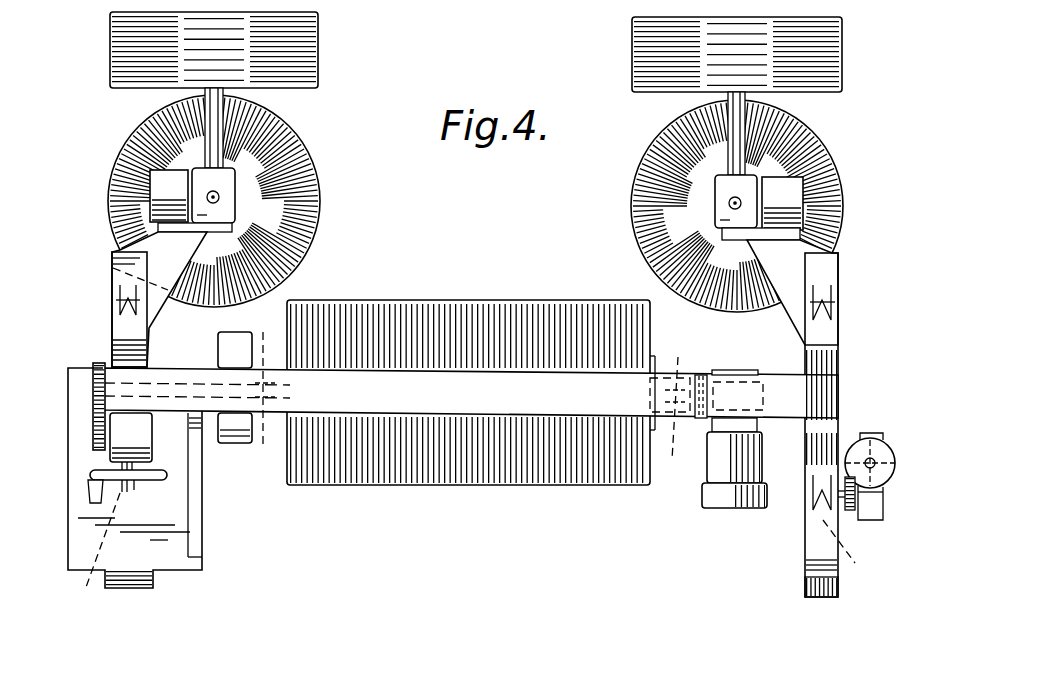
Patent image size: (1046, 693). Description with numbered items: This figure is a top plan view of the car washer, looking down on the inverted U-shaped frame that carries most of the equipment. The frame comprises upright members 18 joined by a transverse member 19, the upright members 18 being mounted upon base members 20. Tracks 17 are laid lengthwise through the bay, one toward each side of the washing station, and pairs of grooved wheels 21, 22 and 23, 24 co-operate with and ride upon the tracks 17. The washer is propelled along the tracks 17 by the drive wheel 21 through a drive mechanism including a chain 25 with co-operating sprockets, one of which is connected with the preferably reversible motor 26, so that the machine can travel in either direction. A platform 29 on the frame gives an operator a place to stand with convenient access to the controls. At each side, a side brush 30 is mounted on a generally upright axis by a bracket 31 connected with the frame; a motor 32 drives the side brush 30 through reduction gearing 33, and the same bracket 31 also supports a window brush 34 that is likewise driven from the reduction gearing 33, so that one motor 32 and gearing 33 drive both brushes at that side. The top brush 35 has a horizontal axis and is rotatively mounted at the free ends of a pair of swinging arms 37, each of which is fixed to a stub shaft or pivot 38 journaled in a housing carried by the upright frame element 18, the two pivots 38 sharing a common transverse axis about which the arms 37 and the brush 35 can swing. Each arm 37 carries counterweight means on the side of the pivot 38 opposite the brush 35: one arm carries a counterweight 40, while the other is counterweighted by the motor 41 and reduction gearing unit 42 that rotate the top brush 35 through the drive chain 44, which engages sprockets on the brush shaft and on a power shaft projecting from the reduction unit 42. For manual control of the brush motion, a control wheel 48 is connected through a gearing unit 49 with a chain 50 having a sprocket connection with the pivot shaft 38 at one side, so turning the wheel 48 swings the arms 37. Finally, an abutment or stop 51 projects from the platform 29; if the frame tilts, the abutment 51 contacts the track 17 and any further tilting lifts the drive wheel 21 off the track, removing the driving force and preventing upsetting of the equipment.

The tracks 17 is at (779, 5).
The upright members 18 is at (841, 397).
The transverse member 19 is at (786, 375).
The base members 20 is at (113, 274).
The drive wheel 21 is at (853, 293).
The grooved wheel 22 is at (832, 288).
The grooved wheel 23 is at (95, 555).
The grooved wheel 24 is at (114, 272).
The chain 25 is at (850, 511).
The motor 26 is at (884, 452).
The platform 29 is at (163, 557).
The side brushes 30 is at (321, 232).
The brackets 31 is at (148, 330).
The motors 32 is at (165, 188).
The reduction gearing 33 is at (236, 197).
The window brushes 34 is at (320, 62).
The top brush 35 is at (432, 486).
The swinging arms 37 is at (470, 434).
The stub shaft or pivot 38 is at (456, 379).
The counterweight 40 is at (237, 445).
The motor 41 is at (740, 508).
The reduction gearing unit 42 is at (730, 370).
The drive chain 44 is at (703, 375).
The control wheel 48 is at (160, 481).
The gearing unit 49 is at (152, 440).
The chain 50 is at (94, 392).
The abutment or stop 51 is at (133, 592).